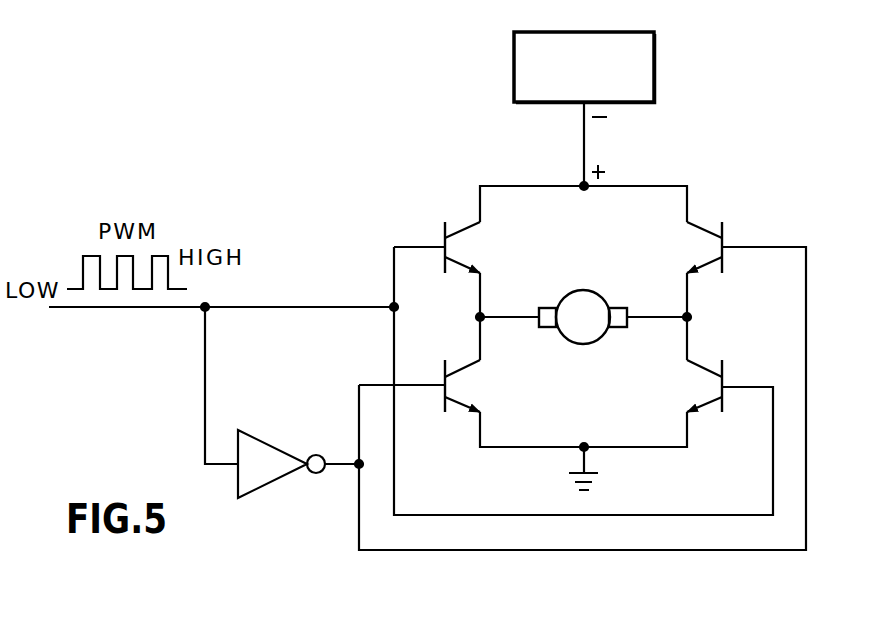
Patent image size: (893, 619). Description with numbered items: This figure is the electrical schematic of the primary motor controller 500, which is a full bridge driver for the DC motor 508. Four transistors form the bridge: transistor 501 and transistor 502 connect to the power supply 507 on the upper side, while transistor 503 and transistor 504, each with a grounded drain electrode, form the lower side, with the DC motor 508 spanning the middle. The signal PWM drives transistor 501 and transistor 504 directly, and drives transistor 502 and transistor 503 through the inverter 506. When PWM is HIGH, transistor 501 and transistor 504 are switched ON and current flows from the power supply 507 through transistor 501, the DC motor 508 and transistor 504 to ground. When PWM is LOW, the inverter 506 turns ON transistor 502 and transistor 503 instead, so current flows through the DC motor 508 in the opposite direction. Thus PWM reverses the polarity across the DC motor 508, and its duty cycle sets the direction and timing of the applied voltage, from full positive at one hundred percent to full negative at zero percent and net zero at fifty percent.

The controller 500 is at (331, 146).
The transistor 501 is at (461, 219).
The transistor 502 is at (705, 221).
The transistor 503 is at (462, 360).
The transistor 504 is at (705, 361).
The inverter 506 is at (277, 442).
The power supply 507 is at (655, 63).
The DC motor 508 is at (583, 345).